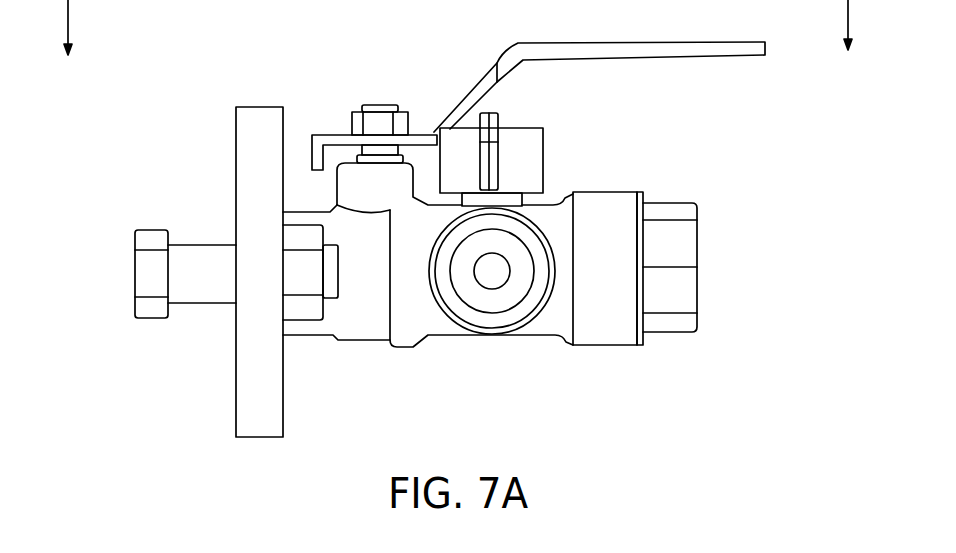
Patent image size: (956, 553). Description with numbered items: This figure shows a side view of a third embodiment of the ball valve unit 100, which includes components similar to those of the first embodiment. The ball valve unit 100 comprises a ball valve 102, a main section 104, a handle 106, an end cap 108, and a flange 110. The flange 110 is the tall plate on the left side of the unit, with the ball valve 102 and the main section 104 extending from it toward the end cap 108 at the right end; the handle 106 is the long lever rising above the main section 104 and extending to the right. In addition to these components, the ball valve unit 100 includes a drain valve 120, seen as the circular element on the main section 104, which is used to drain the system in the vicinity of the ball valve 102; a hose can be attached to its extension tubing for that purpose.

The ball valve unit 100 is at (312, 95).
The ball valve 102 is at (343, 327).
The main section 104 is at (412, 335).
The handle 106 is at (767, 52).
The end cap 108 is at (605, 203).
The flange 110 is at (253, 117).
The drain valve 120 is at (531, 319).